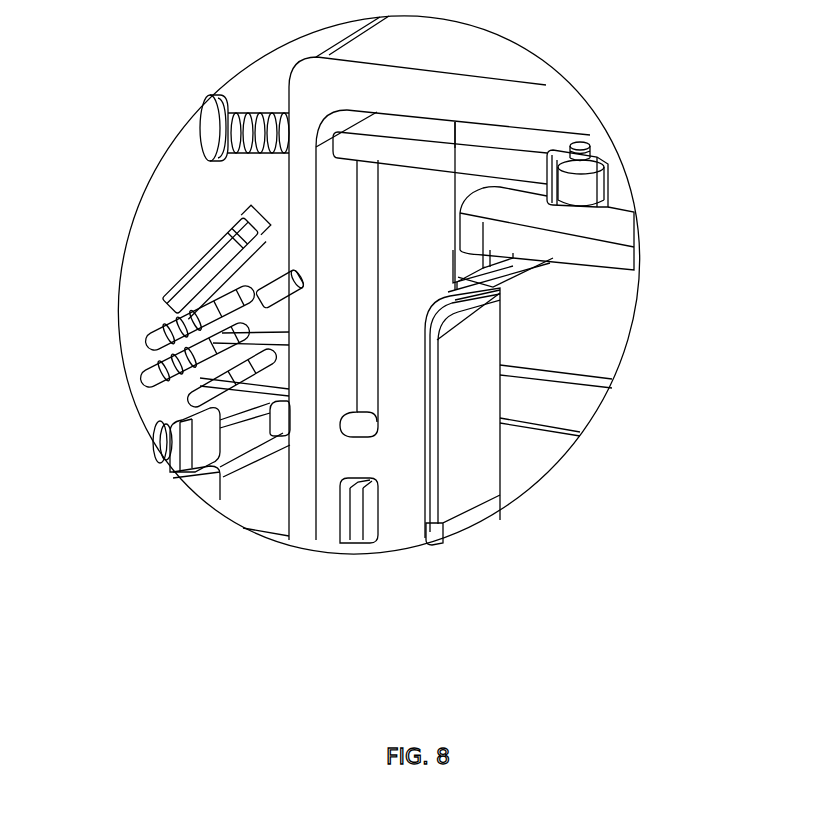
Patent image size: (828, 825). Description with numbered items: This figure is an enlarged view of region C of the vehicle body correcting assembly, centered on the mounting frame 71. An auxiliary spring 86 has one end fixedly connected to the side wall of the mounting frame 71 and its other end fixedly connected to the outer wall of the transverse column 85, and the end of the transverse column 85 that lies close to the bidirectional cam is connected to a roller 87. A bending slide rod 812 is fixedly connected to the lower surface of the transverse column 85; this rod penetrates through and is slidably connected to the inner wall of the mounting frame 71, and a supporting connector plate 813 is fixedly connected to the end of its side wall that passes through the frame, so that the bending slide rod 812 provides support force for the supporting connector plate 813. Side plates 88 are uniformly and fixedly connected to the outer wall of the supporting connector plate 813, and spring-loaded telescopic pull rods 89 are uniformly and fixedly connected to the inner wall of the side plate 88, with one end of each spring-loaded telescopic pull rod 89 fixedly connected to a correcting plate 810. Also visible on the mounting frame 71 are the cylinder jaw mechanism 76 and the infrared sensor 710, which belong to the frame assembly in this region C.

The mounting frame 71 is at (465, 95).
The transverse column 85 is at (490, 163).
The roller 87 is at (593, 183).
The cylinder jaw mechanism 76 is at (598, 255).
The bending slide rod 812 is at (367, 238).
The auxiliary spring 86 is at (250, 117).
The side plate 88 is at (178, 283).
The spring-loaded telescopic pull rod 89 is at (150, 328).
The correcting plate 810 is at (155, 382).
The supporting connector plate 813 is at (250, 440).
The infrared sensor 710 is at (366, 522).
The region C is at (565, 456).